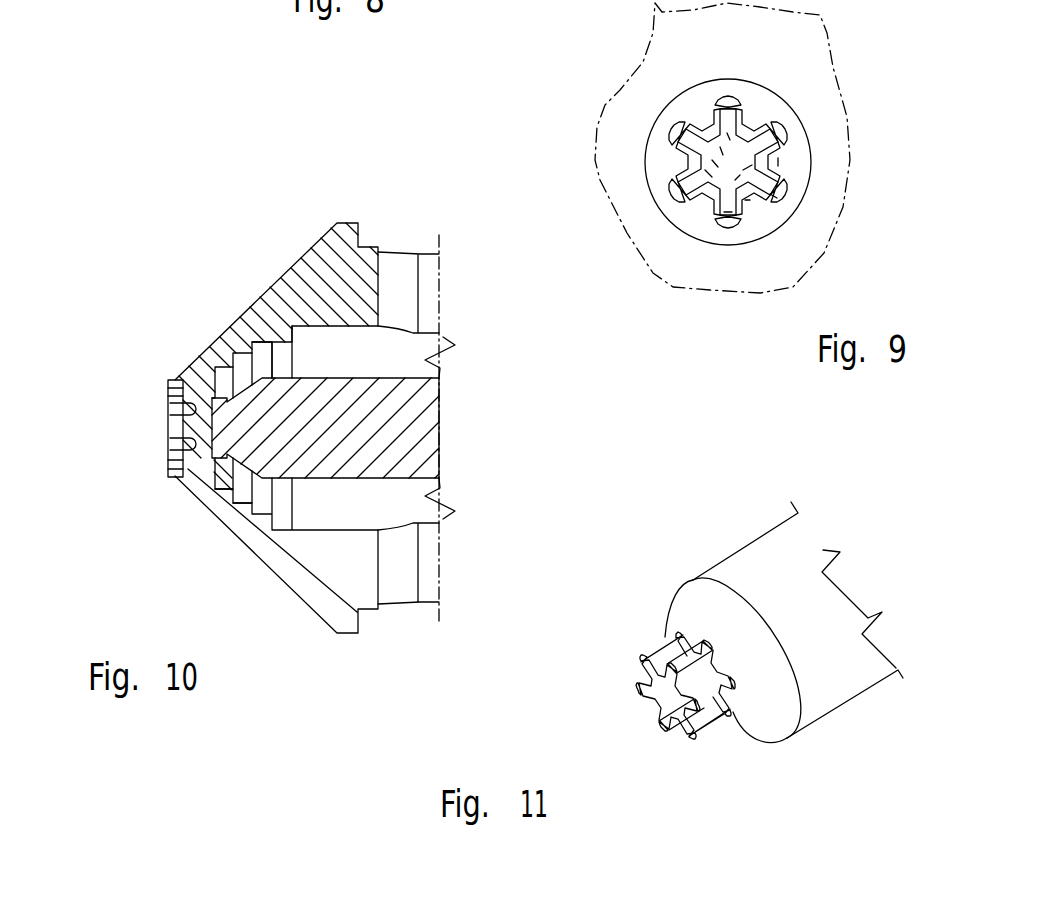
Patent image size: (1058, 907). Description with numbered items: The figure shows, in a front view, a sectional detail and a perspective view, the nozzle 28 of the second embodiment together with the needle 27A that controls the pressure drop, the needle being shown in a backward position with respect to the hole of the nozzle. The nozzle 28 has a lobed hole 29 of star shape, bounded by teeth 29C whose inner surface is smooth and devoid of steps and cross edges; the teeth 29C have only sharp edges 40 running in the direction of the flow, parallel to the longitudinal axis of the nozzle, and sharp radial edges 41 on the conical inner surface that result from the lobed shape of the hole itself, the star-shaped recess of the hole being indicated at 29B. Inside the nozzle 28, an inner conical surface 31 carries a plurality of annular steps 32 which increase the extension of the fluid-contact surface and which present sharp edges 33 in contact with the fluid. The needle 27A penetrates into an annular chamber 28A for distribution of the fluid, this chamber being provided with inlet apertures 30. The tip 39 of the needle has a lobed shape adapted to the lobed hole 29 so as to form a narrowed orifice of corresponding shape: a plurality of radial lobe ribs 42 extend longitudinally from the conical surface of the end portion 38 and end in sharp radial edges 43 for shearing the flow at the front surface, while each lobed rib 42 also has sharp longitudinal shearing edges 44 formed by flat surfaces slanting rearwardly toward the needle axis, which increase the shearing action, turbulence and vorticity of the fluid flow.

In FIG. 10, the drive shaft 27A is at (415, 427).
In FIG. 11, the drive shaft 27A is at (783, 540).
In FIG. 9, the nozzle 28 is at (647, 77).
In FIG. 10, the nozzle 28 is at (322, 255).
In FIG. 10, the annular chamber 28A is at (407, 352).
In FIG. 9, the lobed hole 29 is at (682, 220).
In FIG. 10, the lobed hole 29 is at (155, 433).
In FIG. 9, the star-shaped recess 29B is at (752, 137).
In FIG. 9, the teeth 29C is at (777, 160).
In FIG. 10, the teeth 29C is at (168, 405).
In FIG. 10, the inlet apertures 30 is at (395, 255).
In FIG. 10, the inner conical surface 31 is at (283, 337).
In FIG. 10, the annular steps 32 is at (230, 496).
In FIG. 10, the sharp edges 33 is at (222, 486).
In FIG. 11, the end portion 38 is at (710, 610).
In FIG. 9, the tip 39 is at (708, 155).
In FIG. 10, the tip 39 is at (197, 390).
In FIG. 11, the tip 39 is at (648, 720).
In FIG. 9, the sharp edges 40 is at (748, 200).
In FIG. 10, the sharp edges 40 is at (180, 474).
In FIG. 9, the sharp radial edges 41 is at (773, 192).
In FIG. 9, the radial lobe ribs 42 is at (728, 207).
In FIG. 11, the radial lobe ribs 42 is at (635, 662).
In FIG. 11, the sharp radial edges 43 is at (635, 677).
In FIG. 11, the sharp longitudinal shearing edges 44 is at (650, 657).